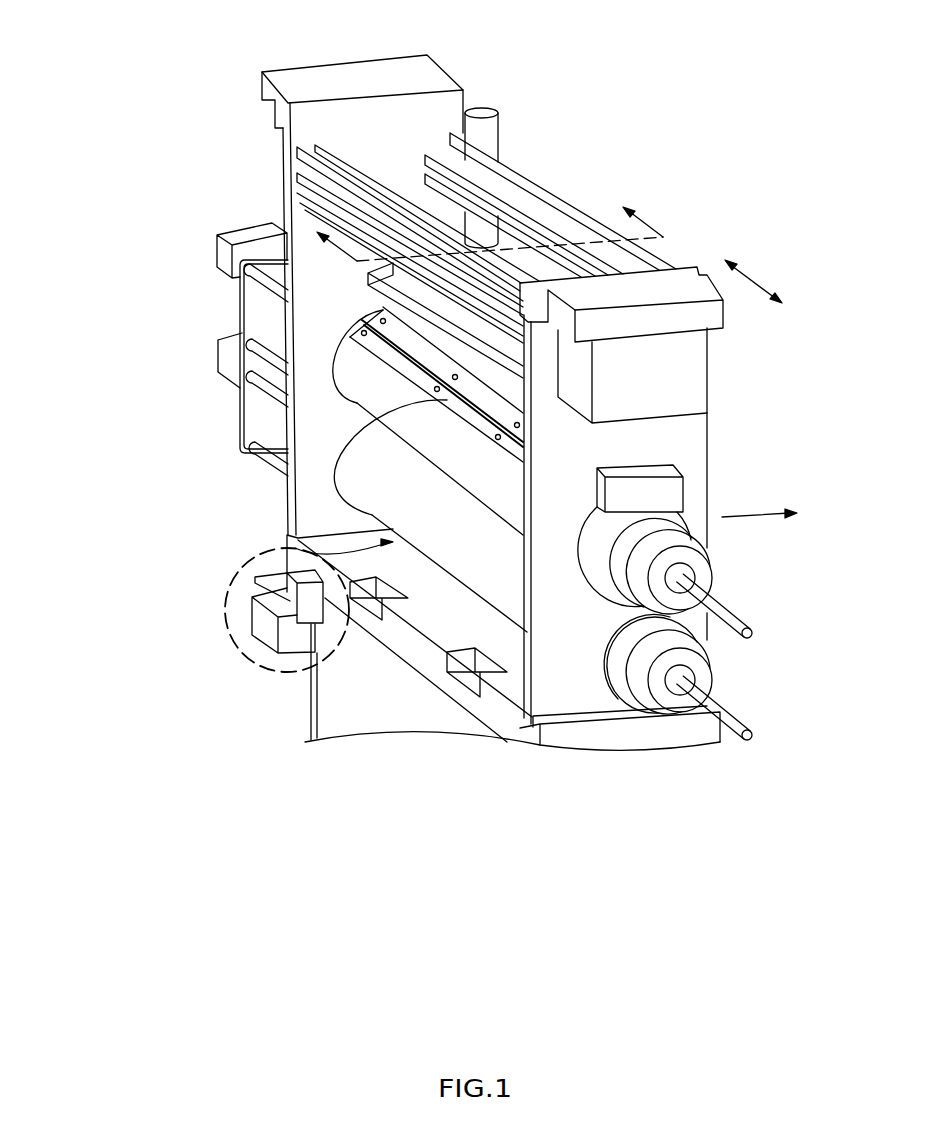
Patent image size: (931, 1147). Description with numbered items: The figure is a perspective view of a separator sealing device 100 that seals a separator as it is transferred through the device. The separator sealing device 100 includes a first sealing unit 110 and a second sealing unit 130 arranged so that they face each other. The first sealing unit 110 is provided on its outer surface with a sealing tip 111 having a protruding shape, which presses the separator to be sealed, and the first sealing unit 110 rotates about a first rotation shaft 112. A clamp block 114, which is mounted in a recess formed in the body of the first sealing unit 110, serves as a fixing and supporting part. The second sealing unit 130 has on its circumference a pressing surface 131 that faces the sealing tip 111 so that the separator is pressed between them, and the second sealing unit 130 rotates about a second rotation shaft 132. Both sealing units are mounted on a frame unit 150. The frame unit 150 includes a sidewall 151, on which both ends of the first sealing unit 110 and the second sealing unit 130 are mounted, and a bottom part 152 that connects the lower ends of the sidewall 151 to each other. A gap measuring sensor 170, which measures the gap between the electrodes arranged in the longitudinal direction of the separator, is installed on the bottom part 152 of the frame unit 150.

The separator sealing device 100 is at (117, 31).
The first sealing unit 110 is at (360, 380).
The sealing tip 111 is at (447, 400).
The first rotation shaft 112 is at (740, 622).
The clamp block 114 is at (362, 332).
The second sealing unit 130 is at (350, 585).
The pressing surface 131 is at (462, 556).
The second rotation shaft 132 is at (740, 722).
The frame unit 150 is at (278, 168).
The sidewall 151 is at (312, 292).
The bottom part 152 is at (508, 646).
The gap measuring sensor 170 is at (228, 607).